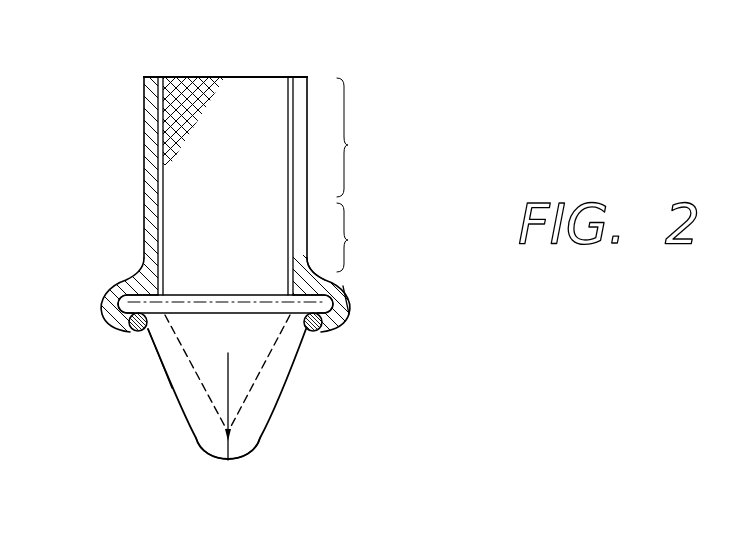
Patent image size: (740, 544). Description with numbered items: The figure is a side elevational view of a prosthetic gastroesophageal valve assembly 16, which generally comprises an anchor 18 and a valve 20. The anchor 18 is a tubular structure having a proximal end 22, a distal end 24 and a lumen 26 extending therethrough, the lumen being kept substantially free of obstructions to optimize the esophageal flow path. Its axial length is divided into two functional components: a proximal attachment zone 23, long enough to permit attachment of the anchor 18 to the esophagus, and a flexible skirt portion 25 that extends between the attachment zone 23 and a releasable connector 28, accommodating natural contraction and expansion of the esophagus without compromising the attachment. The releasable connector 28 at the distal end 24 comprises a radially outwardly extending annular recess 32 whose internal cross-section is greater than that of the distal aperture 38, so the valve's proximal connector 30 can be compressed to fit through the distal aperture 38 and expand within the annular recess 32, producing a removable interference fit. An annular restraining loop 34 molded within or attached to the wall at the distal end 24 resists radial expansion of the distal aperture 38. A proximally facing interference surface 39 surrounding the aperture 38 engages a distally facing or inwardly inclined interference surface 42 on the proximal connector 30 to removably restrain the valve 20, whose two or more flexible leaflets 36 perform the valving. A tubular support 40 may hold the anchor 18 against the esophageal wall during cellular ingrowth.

The valve assembly 16 is at (395, 108).
The anchor 18 is at (156, 185).
The valve 20 is at (295, 393).
The proximal end 22 is at (158, 77).
The proximal attachment zone 23 is at (361, 137).
The distal end 24 is at (357, 302).
The flexible skirt portion 25 is at (361, 237).
The lumen 26 is at (257, 108).
The releasable connector 28 is at (102, 303).
The proximal connector 30 is at (332, 293).
The annular recess 32 is at (132, 303).
The annular restraining loop 34 is at (128, 330).
The leaflets 36 is at (197, 440).
The distal aperture 38 is at (153, 350).
The interference surface 39 is at (342, 316).
The tubular support 40 is at (188, 127).
The interference surface 42 is at (353, 289).